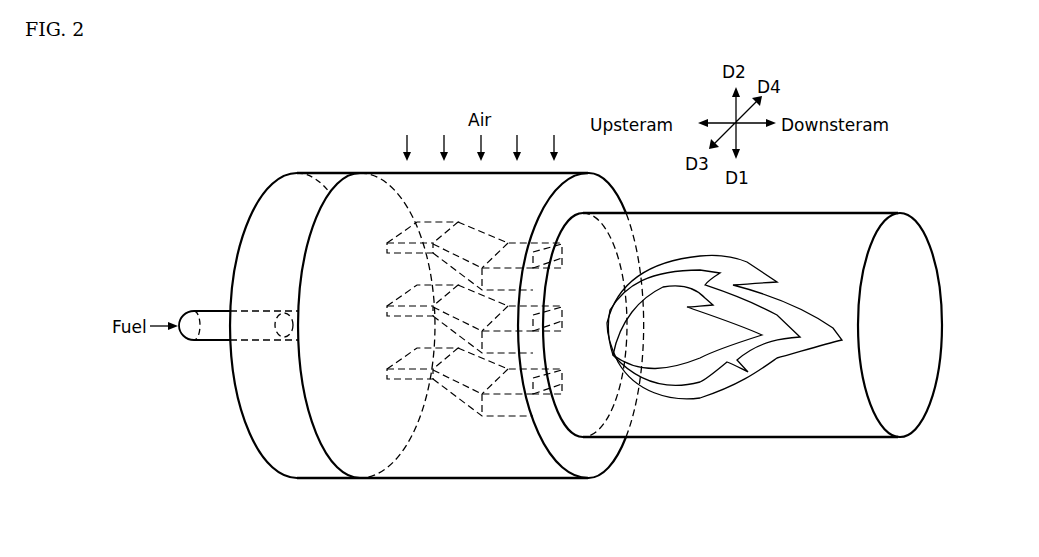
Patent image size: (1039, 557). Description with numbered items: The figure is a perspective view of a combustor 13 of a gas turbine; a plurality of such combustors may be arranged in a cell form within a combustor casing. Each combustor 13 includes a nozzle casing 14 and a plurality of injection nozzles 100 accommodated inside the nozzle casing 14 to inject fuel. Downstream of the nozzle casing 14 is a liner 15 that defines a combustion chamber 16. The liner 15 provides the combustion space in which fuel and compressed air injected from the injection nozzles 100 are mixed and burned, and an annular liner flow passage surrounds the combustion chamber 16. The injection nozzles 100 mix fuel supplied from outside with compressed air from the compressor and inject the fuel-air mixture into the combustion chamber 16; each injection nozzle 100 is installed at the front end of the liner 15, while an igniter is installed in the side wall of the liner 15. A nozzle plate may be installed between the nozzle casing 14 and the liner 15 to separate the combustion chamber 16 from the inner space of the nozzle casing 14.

The combustor 13 is at (251, 101).
The nozzle casing 14 is at (417, 480).
The liner 15 is at (825, 438).
The combustion chamber 16 is at (657, 416).
The injection nozzle 100 is at (506, 452).